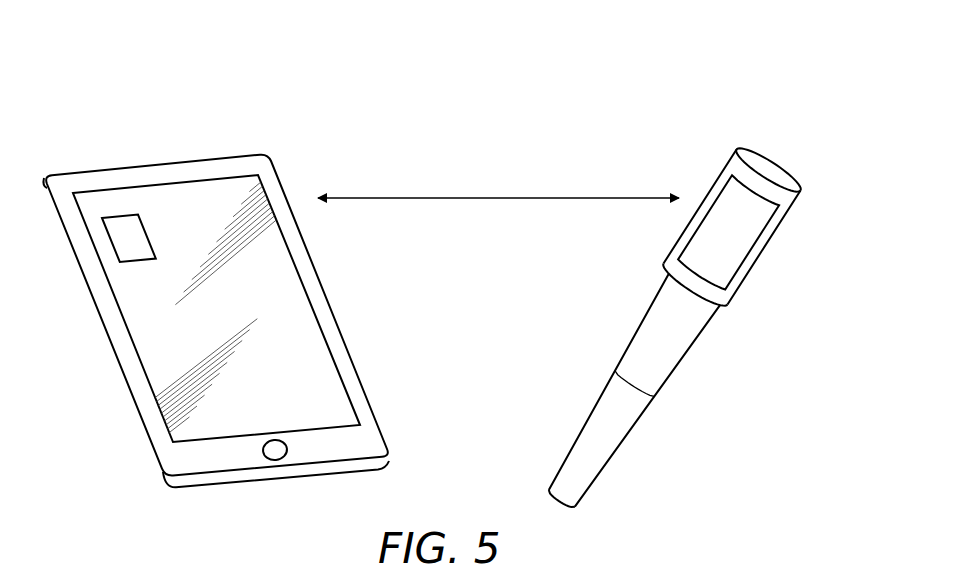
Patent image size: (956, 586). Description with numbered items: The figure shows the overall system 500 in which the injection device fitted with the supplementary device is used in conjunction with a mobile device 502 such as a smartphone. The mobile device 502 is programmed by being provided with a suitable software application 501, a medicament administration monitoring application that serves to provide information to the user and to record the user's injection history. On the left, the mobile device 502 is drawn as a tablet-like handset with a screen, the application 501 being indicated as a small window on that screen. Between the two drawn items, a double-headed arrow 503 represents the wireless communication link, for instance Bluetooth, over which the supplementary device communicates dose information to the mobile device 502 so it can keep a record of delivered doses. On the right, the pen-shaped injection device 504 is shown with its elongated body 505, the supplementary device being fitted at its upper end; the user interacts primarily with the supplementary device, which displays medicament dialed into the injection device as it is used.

The system 500 is at (219, 95).
The software application 501 is at (120, 210).
The mobile device 502 is at (235, 485).
The wireless communication link 503 is at (497, 197).
The stylus 504 is at (781, 158).
The stylus body 505 is at (682, 340).